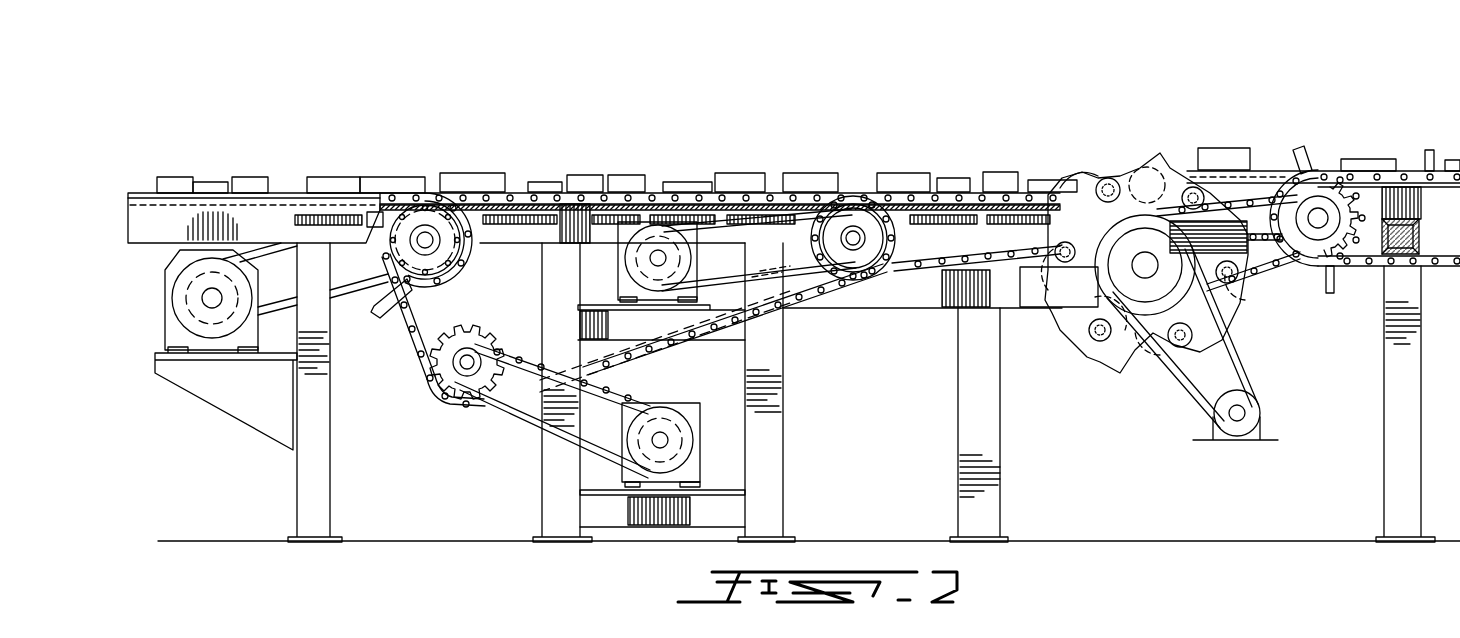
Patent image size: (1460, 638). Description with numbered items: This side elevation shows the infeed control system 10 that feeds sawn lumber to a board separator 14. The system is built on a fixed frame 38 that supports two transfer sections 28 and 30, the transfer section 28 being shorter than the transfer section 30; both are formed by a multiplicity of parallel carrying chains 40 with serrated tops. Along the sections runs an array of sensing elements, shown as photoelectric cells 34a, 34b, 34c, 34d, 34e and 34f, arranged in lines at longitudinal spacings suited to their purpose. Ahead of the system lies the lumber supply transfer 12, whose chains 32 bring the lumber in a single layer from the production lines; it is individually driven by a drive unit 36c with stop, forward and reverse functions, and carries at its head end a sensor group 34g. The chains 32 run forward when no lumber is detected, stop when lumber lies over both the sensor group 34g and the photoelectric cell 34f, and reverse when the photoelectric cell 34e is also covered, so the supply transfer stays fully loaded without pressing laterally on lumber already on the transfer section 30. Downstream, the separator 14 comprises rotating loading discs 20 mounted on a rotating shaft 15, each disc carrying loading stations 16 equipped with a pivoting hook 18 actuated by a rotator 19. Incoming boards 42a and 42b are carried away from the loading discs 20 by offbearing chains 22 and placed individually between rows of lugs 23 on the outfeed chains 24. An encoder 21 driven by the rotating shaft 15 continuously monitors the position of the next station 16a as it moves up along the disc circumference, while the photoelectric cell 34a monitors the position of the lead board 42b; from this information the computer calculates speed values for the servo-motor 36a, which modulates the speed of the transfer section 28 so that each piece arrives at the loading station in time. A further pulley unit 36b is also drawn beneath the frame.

The infeed control system 10 is at (799, 128).
The lumber supply transfer 12 is at (190, 155).
The separator 14 is at (1160, 108).
The rotating shaft 15 is at (1140, 273).
The loading station 16 is at (1122, 365).
The next station 16a is at (1043, 302).
The pivoting hook 18 is at (1082, 168).
The rotator 19 is at (1108, 186).
The loading discs 20 is at (1175, 183).
The encoder 21 is at (1262, 410).
The offbearing chains 22 is at (1264, 168).
The lugs 23 is at (1304, 147).
The outfeed chains 24 is at (1421, 165).
The transfer section 28 is at (960, 203).
The transfer section 30 is at (728, 192).
The chains 32 is at (245, 190).
The photoelectric cell 34a is at (1005, 218).
The photoelectric cell 34b is at (927, 218).
The photoelectric cell 34c is at (752, 218).
The photoelectric cell 34d is at (680, 218).
The photoelectric cell 34e is at (592, 218).
The photoelectric cell 34f is at (507, 218).
The sensor group 34g is at (325, 218).
The servo-motor 36a is at (688, 292).
The motor pulley 36b is at (715, 392).
The drive unit 36c is at (248, 342).
The fixed frame 38 is at (912, 312).
The carrying chains 40 is at (640, 197).
The board 42a is at (1047, 180).
The board 42b is at (1008, 182).